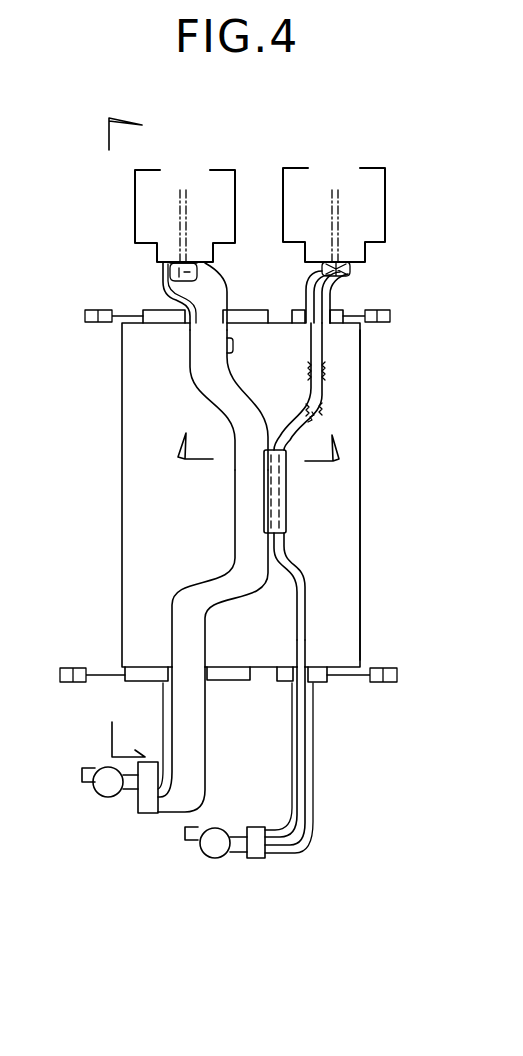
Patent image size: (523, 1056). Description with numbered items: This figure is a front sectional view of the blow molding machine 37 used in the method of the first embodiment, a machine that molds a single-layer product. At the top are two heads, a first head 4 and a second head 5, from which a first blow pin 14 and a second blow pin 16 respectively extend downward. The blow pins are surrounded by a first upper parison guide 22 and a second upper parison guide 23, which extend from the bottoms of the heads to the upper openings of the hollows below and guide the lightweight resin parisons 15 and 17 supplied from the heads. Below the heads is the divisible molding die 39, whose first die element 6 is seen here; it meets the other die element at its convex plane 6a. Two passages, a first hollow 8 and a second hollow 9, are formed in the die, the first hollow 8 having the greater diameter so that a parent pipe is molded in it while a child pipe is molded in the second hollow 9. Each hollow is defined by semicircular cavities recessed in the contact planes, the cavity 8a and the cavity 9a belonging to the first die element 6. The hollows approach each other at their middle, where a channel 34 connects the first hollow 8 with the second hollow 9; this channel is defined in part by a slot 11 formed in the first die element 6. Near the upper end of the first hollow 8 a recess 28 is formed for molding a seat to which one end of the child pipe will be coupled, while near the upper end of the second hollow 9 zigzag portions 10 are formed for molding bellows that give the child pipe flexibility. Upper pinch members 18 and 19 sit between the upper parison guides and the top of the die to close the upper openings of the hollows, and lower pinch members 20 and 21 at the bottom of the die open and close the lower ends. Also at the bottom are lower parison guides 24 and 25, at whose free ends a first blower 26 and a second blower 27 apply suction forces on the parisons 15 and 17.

The blow molding machine 37 is at (374, 120).
The first head 4 is at (231, 186).
The second head 5 is at (382, 186).
The first blow pin 14 is at (158, 264).
The first parison 15 is at (168, 274).
The second blow pin 16 is at (352, 266).
The second parison 17 is at (345, 268).
The first upper parison guide 22 is at (168, 300).
The second upper parison guide 23 is at (333, 289).
The zigzag portions 10 is at (313, 407).
The first upper pinch member 18 is at (153, 325).
The second upper pinch member 19 is at (336, 326).
The divisible molding die 39 is at (398, 334).
The recess 28 is at (222, 345).
The cavity of first hollow 8a is at (196, 378).
The cavity of second hollow 9a is at (314, 421).
The first die element 6 is at (362, 497).
The convex plane 6a is at (361, 462).
The channel 34 is at (272, 481).
The slot 11 is at (284, 459).
The first hollow 8 is at (178, 604).
The second hollow 9 is at (306, 598).
The first lower pinch member 20 is at (132, 677).
The second lower pinch member 21 is at (318, 679).
The first lower parison guide 24 is at (208, 712).
The second lower parison guide 25 is at (317, 775).
The first blower 26 is at (107, 798).
The second blower 27 is at (214, 859).